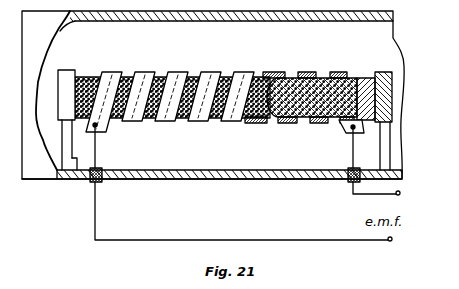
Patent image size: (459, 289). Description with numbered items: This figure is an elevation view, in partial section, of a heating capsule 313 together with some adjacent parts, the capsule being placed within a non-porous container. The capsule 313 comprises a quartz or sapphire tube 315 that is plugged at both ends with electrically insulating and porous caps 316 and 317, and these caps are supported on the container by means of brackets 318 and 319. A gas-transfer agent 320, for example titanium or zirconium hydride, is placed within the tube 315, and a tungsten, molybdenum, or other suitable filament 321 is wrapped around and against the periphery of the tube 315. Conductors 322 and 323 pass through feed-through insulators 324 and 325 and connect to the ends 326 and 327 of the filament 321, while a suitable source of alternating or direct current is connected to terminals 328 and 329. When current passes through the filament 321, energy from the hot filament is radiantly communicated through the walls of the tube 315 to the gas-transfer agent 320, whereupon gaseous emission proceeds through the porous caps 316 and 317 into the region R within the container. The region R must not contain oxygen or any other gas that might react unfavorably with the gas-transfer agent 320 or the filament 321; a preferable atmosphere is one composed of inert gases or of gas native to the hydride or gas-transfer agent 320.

The heating capsule 313 is at (345, 64).
The quartz or sapphire tube 315 is at (88, 77).
The porous cap 316 is at (68, 70).
The porous cap 317 is at (388, 72).
The bracket 318 is at (380, 144).
The bracket 319 is at (78, 182).
The gas-transfer agent 320 is at (306, 73).
The filament 321 is at (180, 72).
The conductor 322 is at (95, 226).
The conductor 323 is at (353, 162).
The feed-through insulator 324 is at (102, 183).
The feed-through insulator 325 is at (349, 182).
The filament end 326 is at (97, 126).
The filament end 327 is at (345, 133).
The terminal 328 is at (399, 196).
The terminal 329 is at (388, 244).
The region R is at (203, 158).